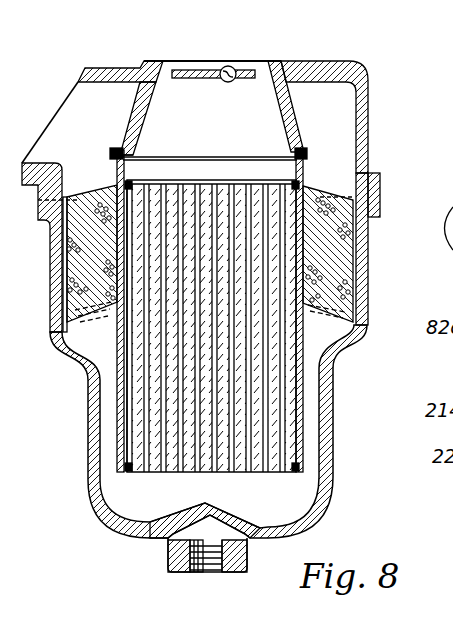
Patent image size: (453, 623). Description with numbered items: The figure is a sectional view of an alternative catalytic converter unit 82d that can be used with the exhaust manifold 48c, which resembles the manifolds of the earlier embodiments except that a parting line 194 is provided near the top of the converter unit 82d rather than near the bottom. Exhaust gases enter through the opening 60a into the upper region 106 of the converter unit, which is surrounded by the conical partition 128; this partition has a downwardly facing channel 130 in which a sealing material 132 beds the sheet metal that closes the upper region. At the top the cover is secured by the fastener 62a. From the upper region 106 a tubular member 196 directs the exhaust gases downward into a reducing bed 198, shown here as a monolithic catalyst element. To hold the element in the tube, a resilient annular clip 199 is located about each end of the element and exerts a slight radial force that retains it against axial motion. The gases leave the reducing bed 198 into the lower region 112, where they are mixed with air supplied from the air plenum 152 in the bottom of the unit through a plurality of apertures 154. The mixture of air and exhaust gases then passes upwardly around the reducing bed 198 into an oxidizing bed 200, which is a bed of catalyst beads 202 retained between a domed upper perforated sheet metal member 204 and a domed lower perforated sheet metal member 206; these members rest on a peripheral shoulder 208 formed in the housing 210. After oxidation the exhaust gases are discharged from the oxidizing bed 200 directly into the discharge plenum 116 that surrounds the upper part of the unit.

The discharge plenum 116 is at (78, 90).
The opening 60a is at (168, 60).
The fastening bolt 62a is at (231, 66).
The exhaust manifold 48c is at (375, 81).
The conical partition 128 is at (138, 109).
The sealing material 132 is at (128, 129).
The channel 130 is at (100, 158).
The upper region 106 is at (246, 102).
The resilient annular clip 199 is at (292, 180).
The parting line 194 is at (378, 197).
The oxidizing bed 200 is at (357, 275).
The lower perforated sheet metal member 206 is at (72, 352).
The lower region 112 is at (113, 488).
The converter unit 82d is at (338, 360).
The apertures 154 is at (180, 523).
The air plenum 152 is at (177, 536).
The tubular member 196 is at (118, 401).
The reducing bed 198 is at (155, 433).
The upper perforated sheet metal member 204 is at (68, 234).
The catalyst beads 202 is at (321, 252).
The housing 210 is at (53, 278).
The peripheral shoulder 208 is at (62, 311).